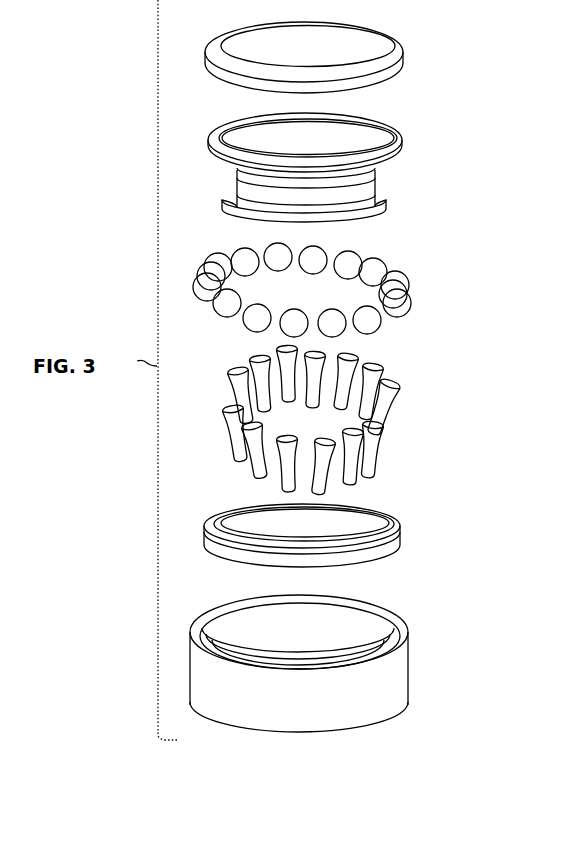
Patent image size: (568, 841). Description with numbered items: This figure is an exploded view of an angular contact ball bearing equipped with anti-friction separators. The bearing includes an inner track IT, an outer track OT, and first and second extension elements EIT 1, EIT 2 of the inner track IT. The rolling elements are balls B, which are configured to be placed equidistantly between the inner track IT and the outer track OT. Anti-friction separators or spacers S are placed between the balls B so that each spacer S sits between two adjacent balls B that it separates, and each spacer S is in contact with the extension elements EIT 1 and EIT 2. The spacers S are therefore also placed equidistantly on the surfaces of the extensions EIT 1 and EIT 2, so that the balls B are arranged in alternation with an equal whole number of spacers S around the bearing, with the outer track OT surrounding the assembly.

The first extension element of the inner track EIT 1 is at (356, 57).
The inner track IT is at (348, 167).
The balls B is at (340, 290).
The anti-friction separators S is at (355, 420).
The second extension element of the inner track EIT 2 is at (360, 535).
The outer track OT is at (345, 663).